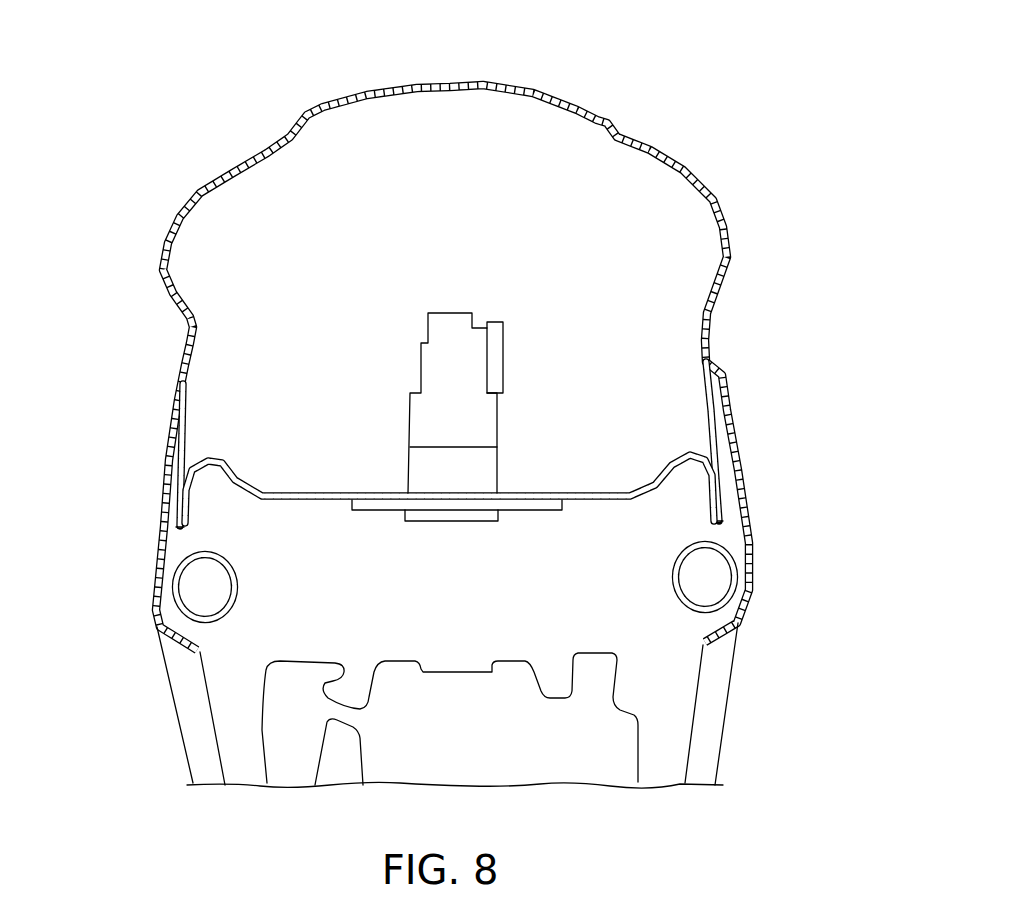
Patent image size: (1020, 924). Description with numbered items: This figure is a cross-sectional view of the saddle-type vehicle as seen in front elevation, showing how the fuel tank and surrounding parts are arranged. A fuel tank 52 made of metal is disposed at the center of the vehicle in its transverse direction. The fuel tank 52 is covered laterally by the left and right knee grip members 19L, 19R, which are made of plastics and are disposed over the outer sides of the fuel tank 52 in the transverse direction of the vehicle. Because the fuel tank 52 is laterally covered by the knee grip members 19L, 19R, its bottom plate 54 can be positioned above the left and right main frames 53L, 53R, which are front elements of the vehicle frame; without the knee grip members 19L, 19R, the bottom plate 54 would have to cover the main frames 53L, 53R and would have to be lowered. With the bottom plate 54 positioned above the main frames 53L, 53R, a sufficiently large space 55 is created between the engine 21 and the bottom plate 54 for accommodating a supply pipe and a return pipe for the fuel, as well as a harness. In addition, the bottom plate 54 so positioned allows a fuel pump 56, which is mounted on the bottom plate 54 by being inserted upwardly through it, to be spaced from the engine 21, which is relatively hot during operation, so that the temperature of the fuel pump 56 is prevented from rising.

The fuel tank 52 is at (605, 121).
The right knee grip member 19R is at (162, 486).
The left knee grip member 19L is at (738, 446).
The right main frame 53R is at (173, 584).
The left main frame 53L is at (726, 546).
The bottom plate 54 is at (597, 501).
The fuel pump 56 is at (453, 522).
The space 55 is at (600, 625).
The engine 21 is at (458, 697).